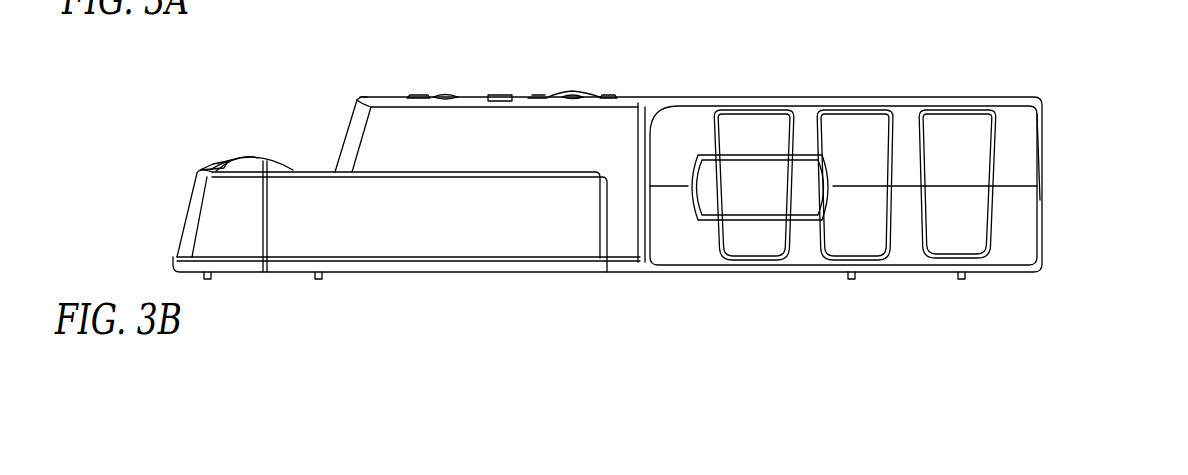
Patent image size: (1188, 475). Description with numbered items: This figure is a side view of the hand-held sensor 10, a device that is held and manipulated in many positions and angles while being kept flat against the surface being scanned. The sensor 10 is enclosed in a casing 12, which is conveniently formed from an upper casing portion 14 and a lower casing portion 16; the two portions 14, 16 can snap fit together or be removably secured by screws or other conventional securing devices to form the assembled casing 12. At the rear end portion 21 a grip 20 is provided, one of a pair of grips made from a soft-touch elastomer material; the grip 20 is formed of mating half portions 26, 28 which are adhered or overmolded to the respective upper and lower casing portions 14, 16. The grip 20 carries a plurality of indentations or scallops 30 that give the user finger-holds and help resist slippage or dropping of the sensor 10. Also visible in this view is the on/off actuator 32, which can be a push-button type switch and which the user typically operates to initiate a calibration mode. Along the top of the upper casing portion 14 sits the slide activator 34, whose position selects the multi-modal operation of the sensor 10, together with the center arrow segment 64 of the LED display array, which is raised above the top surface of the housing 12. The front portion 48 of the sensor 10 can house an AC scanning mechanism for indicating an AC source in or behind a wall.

The hand-held sensor 10 is at (1073, 42).
The casing 12 is at (655, 102).
The upper casing portion 14 is at (520, 154).
The lower casing portion 16 is at (497, 267).
The grip 20 is at (1000, 232).
The rear end portion 21 is at (1005, 97).
The mating half portion 26 is at (1005, 267).
The mating half portion 28 is at (1025, 156).
The scallop 30 is at (953, 127).
The on/off actuator 32 is at (766, 200).
The slide activator 34 is at (571, 90).
The front portion 48 is at (252, 155).
The center arrow segment 64 is at (445, 95).